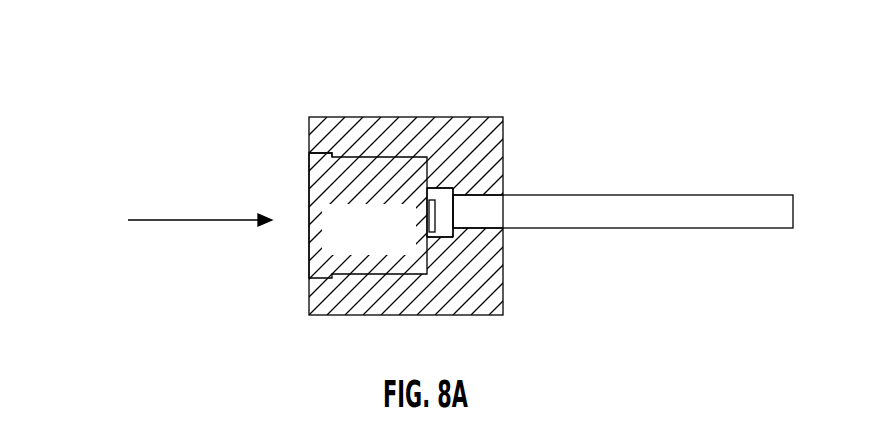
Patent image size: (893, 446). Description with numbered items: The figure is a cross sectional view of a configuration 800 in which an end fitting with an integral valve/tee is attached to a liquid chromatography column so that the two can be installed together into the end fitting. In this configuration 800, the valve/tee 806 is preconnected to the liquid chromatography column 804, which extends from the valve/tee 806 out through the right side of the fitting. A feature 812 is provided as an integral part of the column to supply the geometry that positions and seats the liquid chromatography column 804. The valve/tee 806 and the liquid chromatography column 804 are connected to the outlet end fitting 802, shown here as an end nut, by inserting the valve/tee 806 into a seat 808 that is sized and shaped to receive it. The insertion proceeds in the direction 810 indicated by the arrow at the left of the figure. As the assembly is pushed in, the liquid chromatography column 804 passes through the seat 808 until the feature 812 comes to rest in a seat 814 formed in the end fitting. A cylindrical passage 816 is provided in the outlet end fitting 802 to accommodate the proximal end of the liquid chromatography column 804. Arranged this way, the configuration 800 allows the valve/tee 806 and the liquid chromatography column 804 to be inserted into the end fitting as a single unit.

The configuration 800 is at (452, 159).
The outlet end fitting 802 is at (457, 117).
The liquid chromatography column 804 is at (697, 224).
The valve/tee 806 is at (383, 253).
The seat 808 is at (333, 152).
The direction 810 is at (277, 203).
The feature 812 is at (442, 233).
The seat 814 is at (472, 184).
The cylindrical passage 816 is at (490, 193).